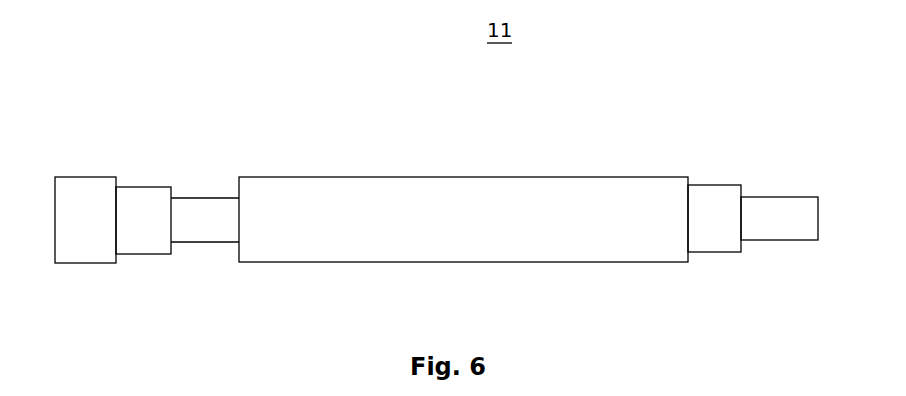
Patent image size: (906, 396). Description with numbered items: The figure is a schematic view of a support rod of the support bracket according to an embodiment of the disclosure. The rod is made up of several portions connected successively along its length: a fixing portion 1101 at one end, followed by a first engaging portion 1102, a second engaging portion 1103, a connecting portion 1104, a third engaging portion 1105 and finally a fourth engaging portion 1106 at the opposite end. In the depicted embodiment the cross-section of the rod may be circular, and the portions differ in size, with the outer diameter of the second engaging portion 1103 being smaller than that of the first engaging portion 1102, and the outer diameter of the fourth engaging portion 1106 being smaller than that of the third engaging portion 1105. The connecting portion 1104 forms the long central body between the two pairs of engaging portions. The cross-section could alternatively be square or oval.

The fixing portion 1101 is at (67, 218).
The first engaging portion 1102 is at (145, 207).
The second engaging portion 1103 is at (212, 215).
The connecting portion 1104 is at (457, 203).
The third engaging portion 1105 is at (703, 210).
The fourth engaging portion 1106 is at (783, 217).